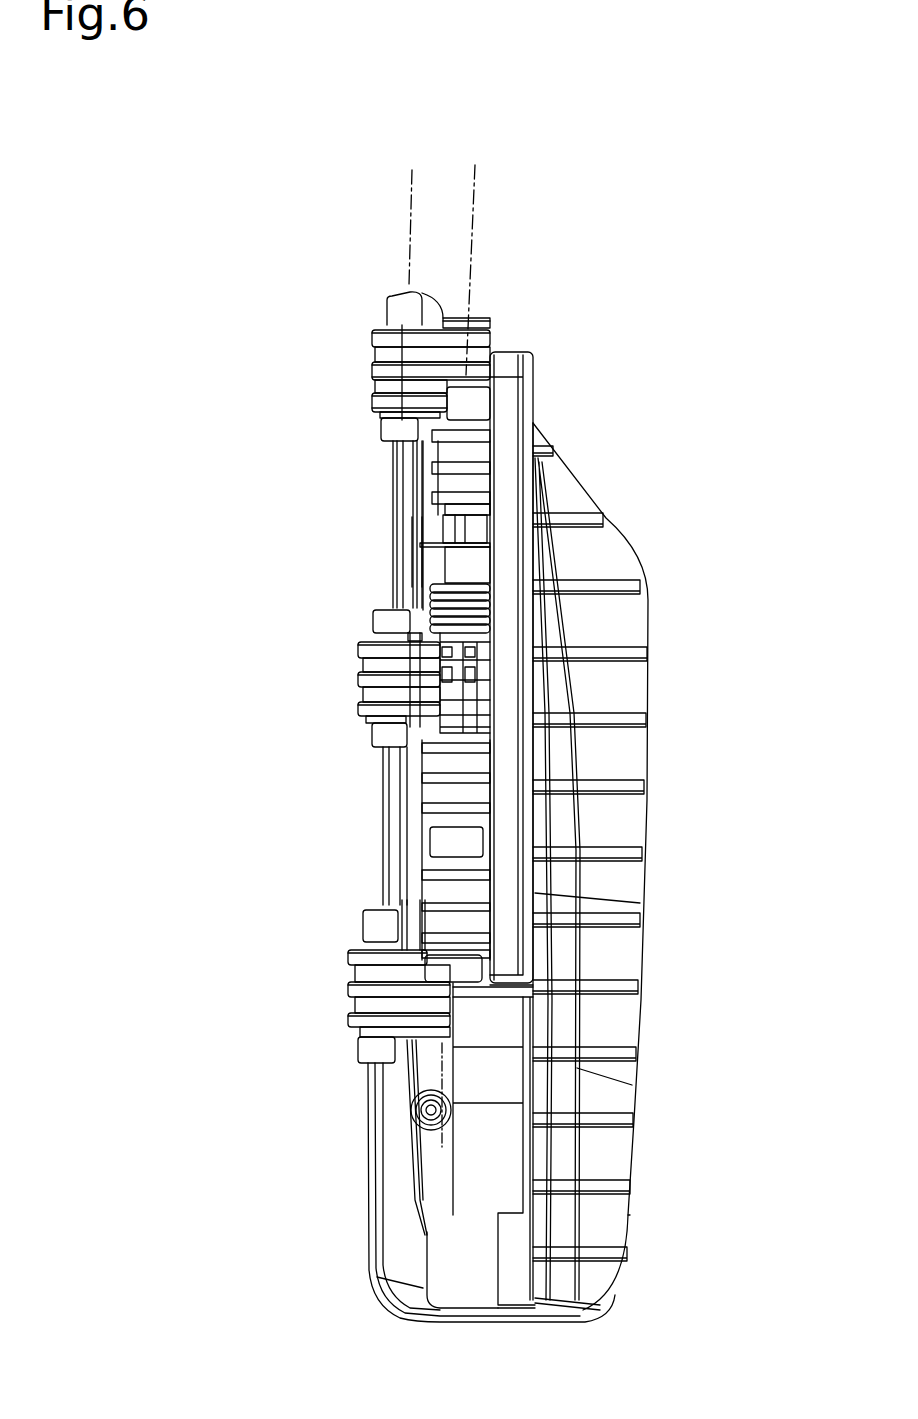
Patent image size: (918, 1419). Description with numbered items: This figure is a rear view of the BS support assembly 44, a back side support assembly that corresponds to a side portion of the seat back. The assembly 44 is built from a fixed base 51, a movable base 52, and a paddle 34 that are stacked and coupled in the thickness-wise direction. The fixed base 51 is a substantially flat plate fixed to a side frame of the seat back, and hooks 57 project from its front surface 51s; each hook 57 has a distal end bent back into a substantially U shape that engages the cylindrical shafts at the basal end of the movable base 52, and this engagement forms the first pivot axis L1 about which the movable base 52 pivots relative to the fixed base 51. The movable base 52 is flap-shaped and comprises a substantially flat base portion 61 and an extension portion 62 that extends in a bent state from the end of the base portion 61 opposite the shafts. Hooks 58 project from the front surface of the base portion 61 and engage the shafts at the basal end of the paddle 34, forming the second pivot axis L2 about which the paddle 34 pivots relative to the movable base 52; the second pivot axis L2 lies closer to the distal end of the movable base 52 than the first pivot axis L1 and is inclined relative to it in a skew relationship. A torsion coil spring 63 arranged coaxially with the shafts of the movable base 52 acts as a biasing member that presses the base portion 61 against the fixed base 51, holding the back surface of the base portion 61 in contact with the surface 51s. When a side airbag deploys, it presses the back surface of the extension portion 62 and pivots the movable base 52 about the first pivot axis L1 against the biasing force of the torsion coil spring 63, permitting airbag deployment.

The BS support assembly 44 is at (134, 215).
The first pivot axis L1 is at (478, 184).
The second pivot axis L2 is at (410, 184).
The fixed base 51 is at (530, 380).
The front surface of the fixed base 51s is at (473, 565).
The movable base 52 is at (628, 1184).
The hooks 57 is at (440, 468).
The hooks 58 is at (373, 377).
The base portion 61 is at (495, 1080).
The extension portion 62 is at (612, 1022).
The torsion coil spring 63 is at (488, 618).
The paddle 34 is at (390, 1318).